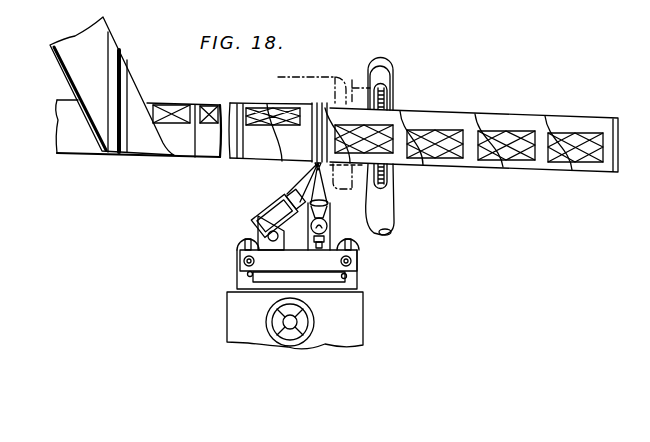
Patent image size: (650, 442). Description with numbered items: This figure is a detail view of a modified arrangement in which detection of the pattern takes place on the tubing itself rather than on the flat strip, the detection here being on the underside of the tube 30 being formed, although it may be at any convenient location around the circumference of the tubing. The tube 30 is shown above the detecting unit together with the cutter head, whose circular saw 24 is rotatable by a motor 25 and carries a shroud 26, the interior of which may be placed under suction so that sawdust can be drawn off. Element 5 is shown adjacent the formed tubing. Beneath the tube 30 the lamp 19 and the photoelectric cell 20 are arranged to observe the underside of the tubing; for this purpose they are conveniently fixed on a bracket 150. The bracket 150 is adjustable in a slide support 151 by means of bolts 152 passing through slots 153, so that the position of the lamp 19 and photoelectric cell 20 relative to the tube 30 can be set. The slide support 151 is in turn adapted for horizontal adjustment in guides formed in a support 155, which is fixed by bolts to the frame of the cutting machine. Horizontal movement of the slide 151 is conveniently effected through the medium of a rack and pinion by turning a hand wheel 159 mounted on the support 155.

The film plate 5 is at (131, 84).
The lamp 19 is at (323, 225).
The photoelectric cell 20 is at (259, 204).
The circular saw 24 is at (385, 99).
The motor 25 is at (287, 75).
The shroud 26 is at (390, 66).
The tube 30 is at (495, 114).
The bracket 150 is at (347, 278).
The slide support 151 is at (262, 292).
The bolts 152 is at (241, 262).
The slots 153 is at (242, 242).
The support 155 is at (333, 338).
The hand wheel 159 is at (302, 346).